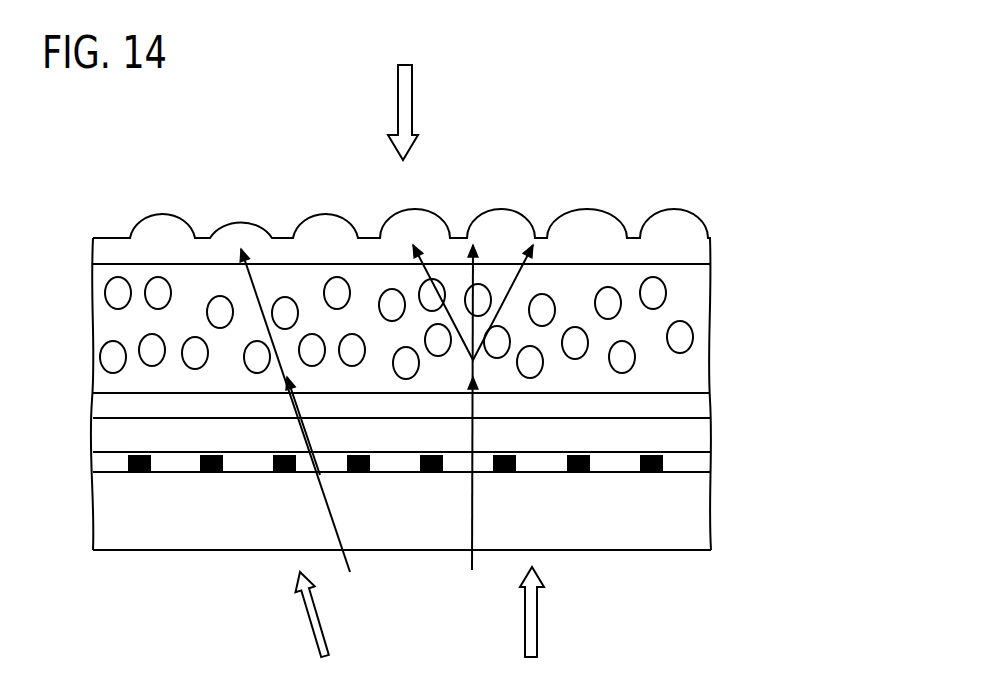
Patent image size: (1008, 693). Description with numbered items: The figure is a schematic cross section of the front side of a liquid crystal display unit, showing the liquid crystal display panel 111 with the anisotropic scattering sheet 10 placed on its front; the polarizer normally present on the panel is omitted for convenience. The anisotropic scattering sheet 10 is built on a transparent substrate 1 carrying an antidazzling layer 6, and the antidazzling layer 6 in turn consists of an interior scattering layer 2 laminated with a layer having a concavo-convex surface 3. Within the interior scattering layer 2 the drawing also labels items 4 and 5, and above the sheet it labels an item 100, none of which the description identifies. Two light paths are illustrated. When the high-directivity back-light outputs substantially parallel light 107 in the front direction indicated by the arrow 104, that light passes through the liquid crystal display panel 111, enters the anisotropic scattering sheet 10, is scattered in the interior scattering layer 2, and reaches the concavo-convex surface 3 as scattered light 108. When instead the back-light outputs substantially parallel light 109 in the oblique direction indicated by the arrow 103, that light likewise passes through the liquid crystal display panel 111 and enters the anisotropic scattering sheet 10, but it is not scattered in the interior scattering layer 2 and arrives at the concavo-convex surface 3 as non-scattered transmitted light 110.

The transparent substrate 1 is at (697, 406).
The interior scattering layer 2 is at (755, 282).
The concavo-convex surface 3 is at (693, 241).
The binder resin 4 is at (680, 297).
The light diffusing particles 5 is at (679, 337).
The antidazzling layer 6 is at (790, 213).
The anisotropic scattering sheet 10 is at (827, 257).
The external light 100 is at (430, 112).
The arrow 103 is at (294, 616).
The arrow 104 is at (558, 612).
The substantially parallel light 107 is at (472, 570).
The scattered light 108 is at (533, 243).
The substantially parallel light 109 is at (350, 567).
The non-scattered transmitted light 110 is at (250, 246).
The liquid crystal display panel 111 is at (725, 540).